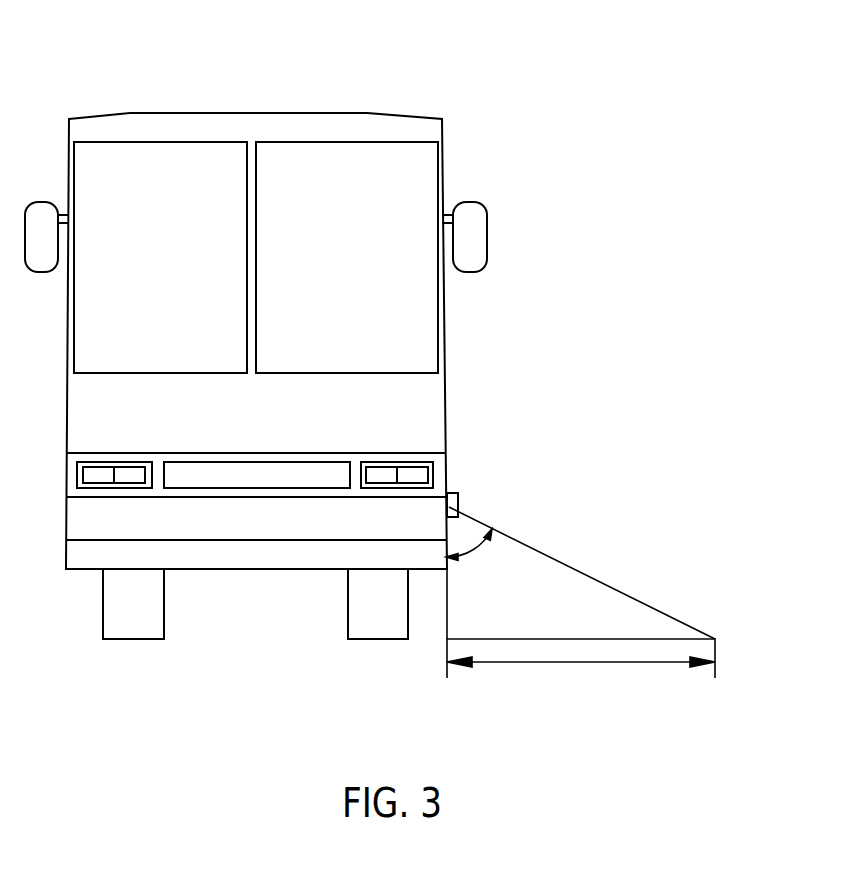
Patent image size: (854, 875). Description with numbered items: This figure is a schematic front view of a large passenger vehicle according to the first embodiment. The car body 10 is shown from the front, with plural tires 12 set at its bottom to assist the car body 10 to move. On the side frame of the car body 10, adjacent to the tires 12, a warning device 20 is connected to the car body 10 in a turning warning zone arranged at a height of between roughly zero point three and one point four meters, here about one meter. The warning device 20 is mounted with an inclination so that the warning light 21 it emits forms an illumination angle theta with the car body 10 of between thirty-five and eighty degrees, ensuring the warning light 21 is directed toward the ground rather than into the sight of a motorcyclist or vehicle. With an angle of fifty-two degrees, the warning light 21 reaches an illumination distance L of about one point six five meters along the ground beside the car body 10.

The car body 10 is at (366, 113).
The tires 12 is at (133, 627).
The warning device 20 is at (457, 490).
The warning light 21 is at (548, 552).